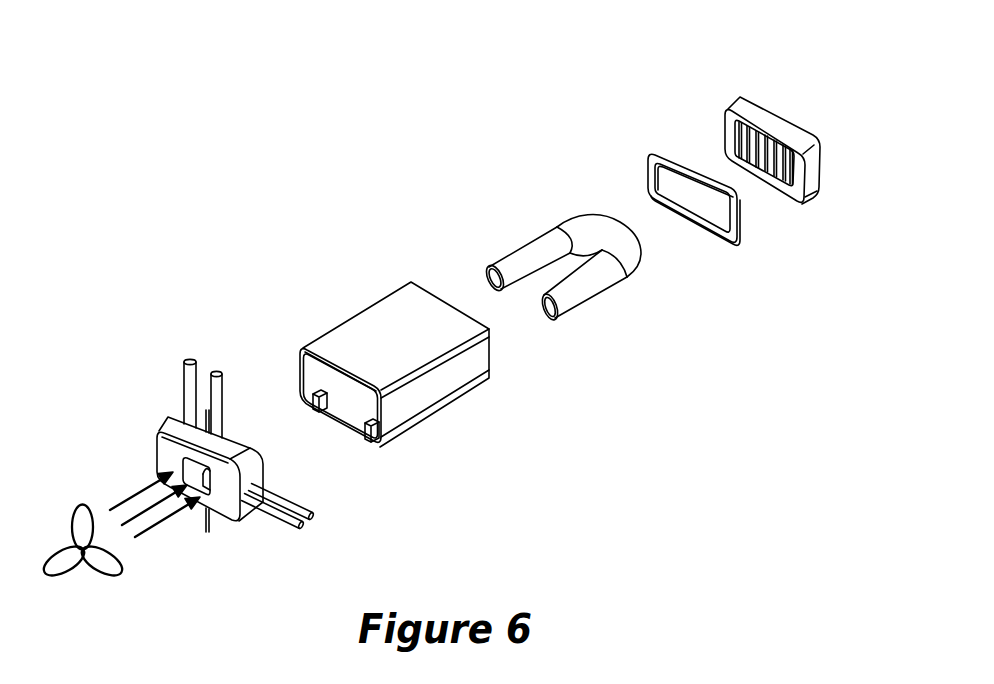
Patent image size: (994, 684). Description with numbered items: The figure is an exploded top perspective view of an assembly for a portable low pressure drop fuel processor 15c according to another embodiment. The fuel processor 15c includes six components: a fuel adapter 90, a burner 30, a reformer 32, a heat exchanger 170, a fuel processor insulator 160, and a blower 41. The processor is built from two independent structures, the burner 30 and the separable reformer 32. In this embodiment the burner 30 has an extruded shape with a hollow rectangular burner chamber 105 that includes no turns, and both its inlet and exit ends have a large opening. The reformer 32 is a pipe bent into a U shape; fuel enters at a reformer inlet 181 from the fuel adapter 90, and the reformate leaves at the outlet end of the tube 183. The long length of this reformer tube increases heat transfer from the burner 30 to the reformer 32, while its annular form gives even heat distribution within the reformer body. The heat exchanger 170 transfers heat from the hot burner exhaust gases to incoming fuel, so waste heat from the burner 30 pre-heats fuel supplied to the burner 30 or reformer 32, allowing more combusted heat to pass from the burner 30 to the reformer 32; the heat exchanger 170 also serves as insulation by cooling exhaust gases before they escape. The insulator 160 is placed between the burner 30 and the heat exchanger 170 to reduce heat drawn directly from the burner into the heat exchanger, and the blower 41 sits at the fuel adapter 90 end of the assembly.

The portable low pressure drop fuel processor 15c is at (206, 139).
The burner 30 is at (363, 353).
The reformer 32 is at (474, 282).
The blower 41 is at (44, 572).
The fuel adapter 90 is at (181, 448).
The burner chamber 105 is at (355, 423).
The fuel processor insulator 160 is at (633, 157).
The heat exchanger 170 is at (716, 116).
The reformer inlet 181 is at (575, 341).
The outlet end of the tube 183 is at (407, 257).